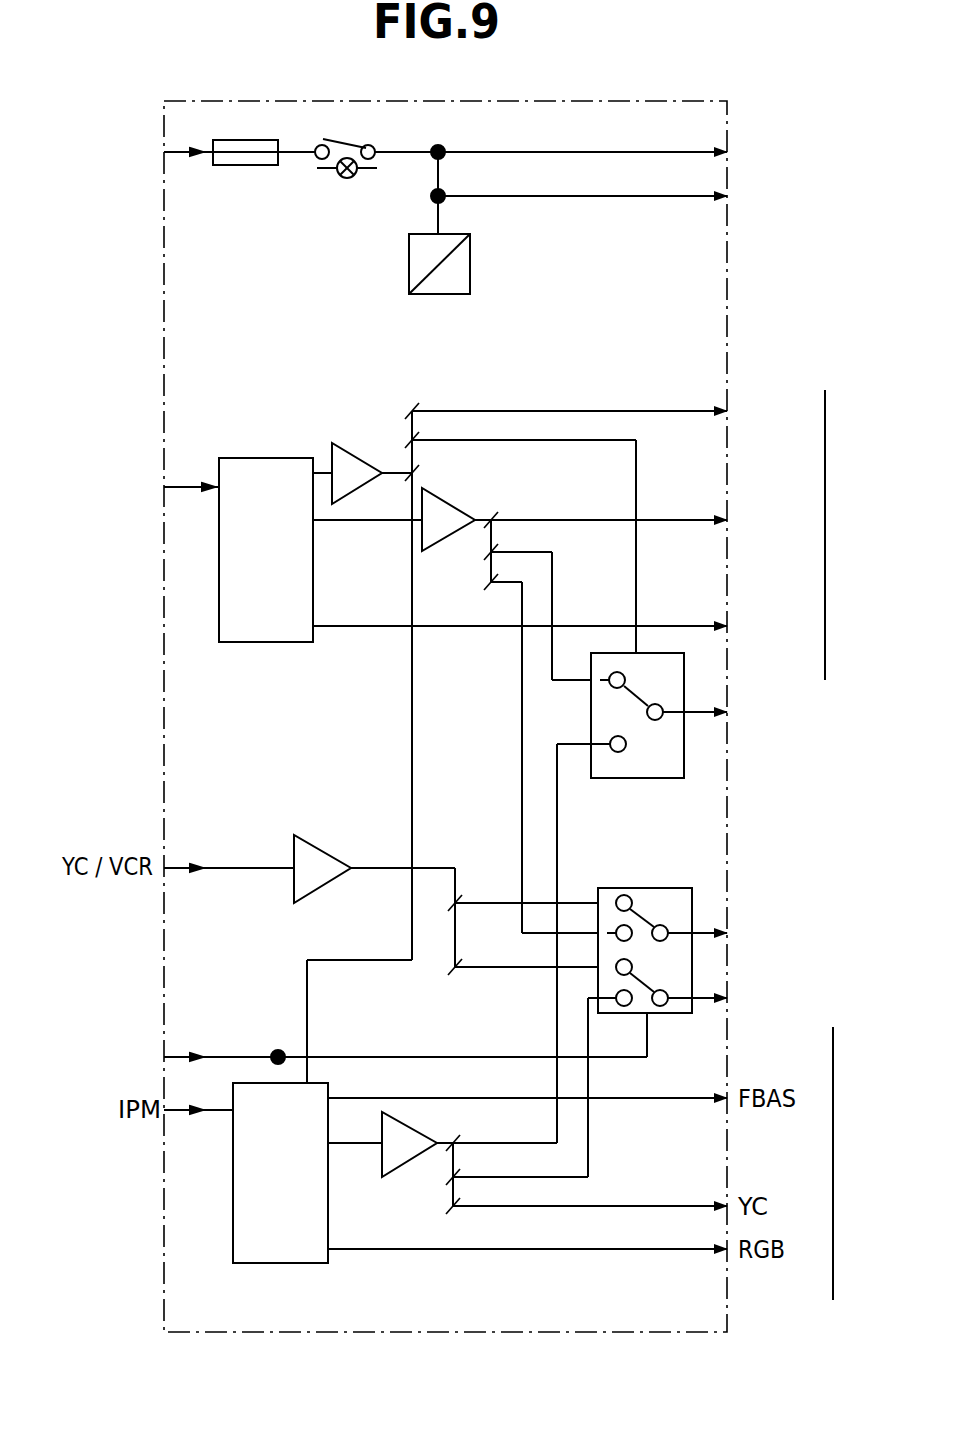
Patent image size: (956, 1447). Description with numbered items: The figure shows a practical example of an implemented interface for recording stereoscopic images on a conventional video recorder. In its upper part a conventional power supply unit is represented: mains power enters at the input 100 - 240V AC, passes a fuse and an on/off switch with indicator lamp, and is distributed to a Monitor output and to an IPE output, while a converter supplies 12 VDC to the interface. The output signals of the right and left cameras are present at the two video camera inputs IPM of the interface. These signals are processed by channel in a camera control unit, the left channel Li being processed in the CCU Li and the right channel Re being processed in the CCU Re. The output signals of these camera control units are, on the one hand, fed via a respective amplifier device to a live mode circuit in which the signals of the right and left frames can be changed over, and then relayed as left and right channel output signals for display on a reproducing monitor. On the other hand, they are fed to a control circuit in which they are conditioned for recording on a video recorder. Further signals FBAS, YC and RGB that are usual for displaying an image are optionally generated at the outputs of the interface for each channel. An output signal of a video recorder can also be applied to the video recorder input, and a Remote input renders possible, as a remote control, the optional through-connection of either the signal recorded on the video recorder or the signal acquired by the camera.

The mains power input with fuse 100 - 240V AC is at (180, 149).
The reproducing monitor Monitor is at (591, 152).
The IPE power output IPE is at (600, 193).
The 12 V DC power supply converter 12 VDC is at (438, 283).
The video camera input IPM is at (159, 487).
The camera control unit for the left channel CCU Li is at (266, 550).
The FBAS output signal FBAS is at (603, 414).
The YC output signal YC is at (621, 520).
The RGB output signal RGB is at (549, 629).
The remote input Remote is at (363, 1041).
The camera control unit for the right channel CCU Re is at (280, 1173).
The left channel Li is at (826, 518).
The right channel Re is at (834, 1180).